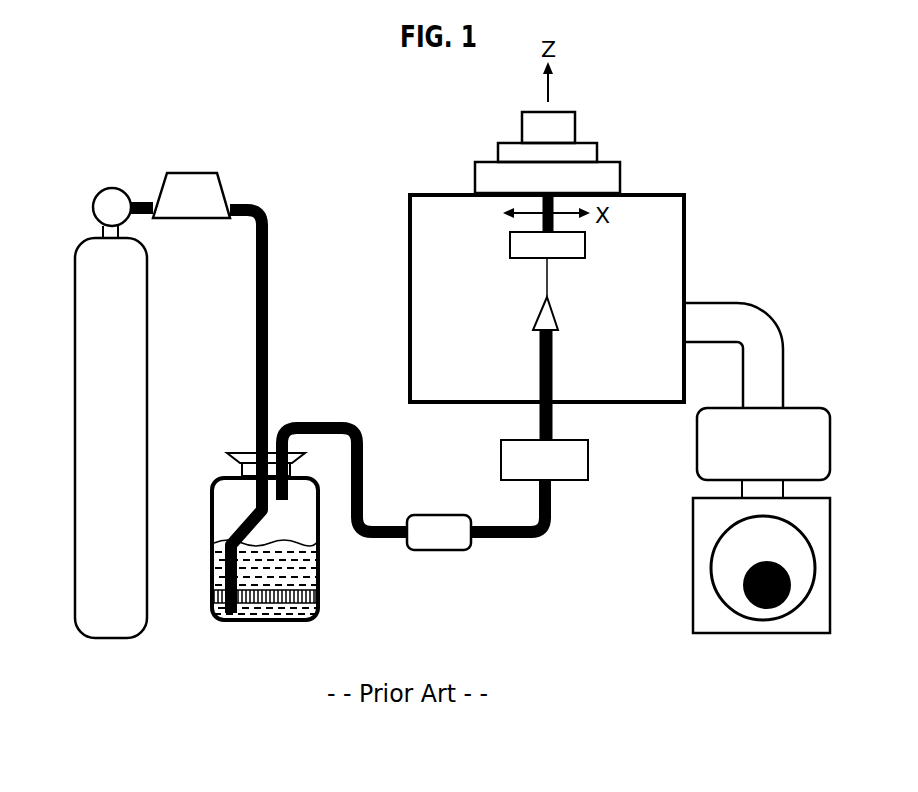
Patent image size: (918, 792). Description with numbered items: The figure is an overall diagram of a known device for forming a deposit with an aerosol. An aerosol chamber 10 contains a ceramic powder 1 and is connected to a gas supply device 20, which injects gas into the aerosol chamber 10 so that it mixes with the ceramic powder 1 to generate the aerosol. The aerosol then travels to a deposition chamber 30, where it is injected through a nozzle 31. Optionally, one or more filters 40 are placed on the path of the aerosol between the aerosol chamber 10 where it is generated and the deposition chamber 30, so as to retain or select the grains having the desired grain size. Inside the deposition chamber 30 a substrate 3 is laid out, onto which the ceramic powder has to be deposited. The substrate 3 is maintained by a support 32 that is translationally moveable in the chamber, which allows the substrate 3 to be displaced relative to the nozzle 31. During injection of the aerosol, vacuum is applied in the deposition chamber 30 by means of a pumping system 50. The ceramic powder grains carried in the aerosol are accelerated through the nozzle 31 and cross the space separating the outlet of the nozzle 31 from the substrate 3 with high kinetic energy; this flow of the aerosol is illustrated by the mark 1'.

The ceramic powder 1 is at (284, 577).
The flow of the aerosol 1' is at (519, 279).
The substrate 3 is at (572, 243).
The aerosol chamber 10 is at (212, 533).
The gas supply device 20 is at (80, 411).
The deposition chamber 30 is at (672, 258).
The nozzle 31 is at (547, 318).
The support 32 is at (607, 149).
The filters 40 is at (577, 460).
The pumping system 50 is at (707, 522).